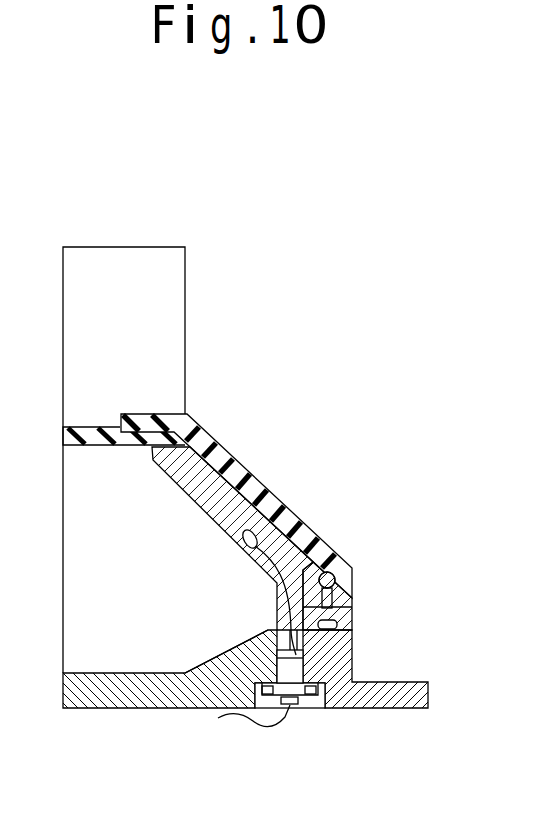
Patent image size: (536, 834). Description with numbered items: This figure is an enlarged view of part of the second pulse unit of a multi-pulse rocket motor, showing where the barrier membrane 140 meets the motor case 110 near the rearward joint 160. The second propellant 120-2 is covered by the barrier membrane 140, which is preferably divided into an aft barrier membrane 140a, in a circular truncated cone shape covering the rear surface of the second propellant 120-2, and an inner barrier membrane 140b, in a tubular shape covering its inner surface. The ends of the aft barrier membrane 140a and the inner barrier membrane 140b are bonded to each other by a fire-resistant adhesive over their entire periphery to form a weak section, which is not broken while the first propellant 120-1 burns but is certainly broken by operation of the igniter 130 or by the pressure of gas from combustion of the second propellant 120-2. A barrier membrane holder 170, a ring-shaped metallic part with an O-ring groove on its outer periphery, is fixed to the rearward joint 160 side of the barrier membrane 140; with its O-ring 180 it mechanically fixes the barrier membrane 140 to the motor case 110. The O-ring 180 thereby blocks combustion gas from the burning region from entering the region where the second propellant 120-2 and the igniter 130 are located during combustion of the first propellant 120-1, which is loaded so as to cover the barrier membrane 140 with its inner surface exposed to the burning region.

The motor case 110 is at (118, 698).
The first propellant 120-1 is at (128, 258).
The second propellant 120-2 is at (163, 662).
The igniter 130 is at (220, 513).
The barrier membrane 140 is at (207, 443).
The aft barrier membrane 140a is at (189, 413).
The inner barrier membrane 140b is at (102, 427).
The rearward joint 160 is at (378, 700).
The barrier membrane holder 170 is at (336, 607).
The O-ring 180 is at (337, 627).